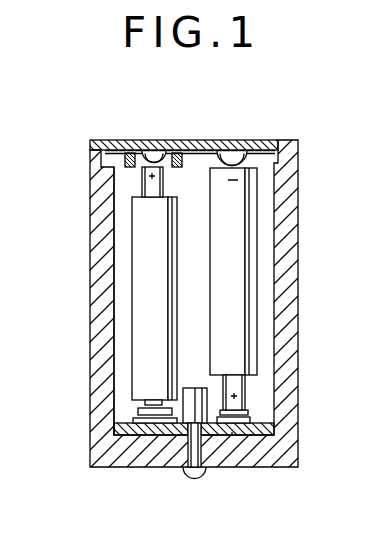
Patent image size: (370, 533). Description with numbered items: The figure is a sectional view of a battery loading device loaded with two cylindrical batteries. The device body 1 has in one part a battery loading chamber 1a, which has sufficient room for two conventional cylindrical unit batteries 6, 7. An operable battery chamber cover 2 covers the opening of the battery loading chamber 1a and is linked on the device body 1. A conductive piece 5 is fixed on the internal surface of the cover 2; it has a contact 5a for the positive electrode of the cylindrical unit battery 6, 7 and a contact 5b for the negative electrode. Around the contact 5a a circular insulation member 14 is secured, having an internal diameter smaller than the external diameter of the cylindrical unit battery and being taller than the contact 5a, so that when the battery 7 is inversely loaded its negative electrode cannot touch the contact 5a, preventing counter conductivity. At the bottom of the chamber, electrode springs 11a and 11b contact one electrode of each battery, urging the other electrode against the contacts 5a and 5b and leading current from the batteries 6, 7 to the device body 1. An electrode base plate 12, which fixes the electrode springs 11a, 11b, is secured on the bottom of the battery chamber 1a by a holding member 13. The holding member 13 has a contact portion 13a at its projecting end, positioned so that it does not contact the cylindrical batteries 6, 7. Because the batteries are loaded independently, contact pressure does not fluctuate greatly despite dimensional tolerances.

The device body 1 is at (290, 358).
The battery loading chamber 1a is at (123, 192).
The battery chamber cover 2 is at (264, 145).
The conductive piece 5 is at (190, 125).
The contact for the positive electrode 5a is at (155, 158).
The contact for the negative electrode 5b is at (241, 150).
The cylindrical unit battery 6 is at (140, 285).
The cylindrical unit battery 7 is at (240, 233).
The electrode spring 11a is at (140, 435).
The electrode spring 11b is at (232, 432).
The electrode base plate 12 is at (273, 437).
The holding member 13 is at (183, 462).
The contact portion 13a is at (190, 388).
The circular insulation member 14 is at (130, 153).